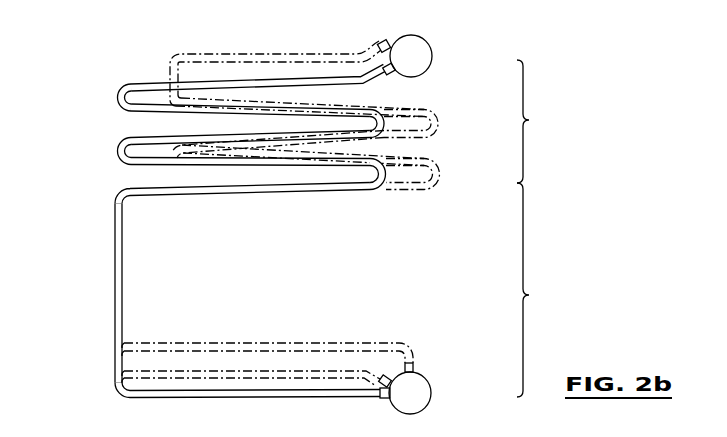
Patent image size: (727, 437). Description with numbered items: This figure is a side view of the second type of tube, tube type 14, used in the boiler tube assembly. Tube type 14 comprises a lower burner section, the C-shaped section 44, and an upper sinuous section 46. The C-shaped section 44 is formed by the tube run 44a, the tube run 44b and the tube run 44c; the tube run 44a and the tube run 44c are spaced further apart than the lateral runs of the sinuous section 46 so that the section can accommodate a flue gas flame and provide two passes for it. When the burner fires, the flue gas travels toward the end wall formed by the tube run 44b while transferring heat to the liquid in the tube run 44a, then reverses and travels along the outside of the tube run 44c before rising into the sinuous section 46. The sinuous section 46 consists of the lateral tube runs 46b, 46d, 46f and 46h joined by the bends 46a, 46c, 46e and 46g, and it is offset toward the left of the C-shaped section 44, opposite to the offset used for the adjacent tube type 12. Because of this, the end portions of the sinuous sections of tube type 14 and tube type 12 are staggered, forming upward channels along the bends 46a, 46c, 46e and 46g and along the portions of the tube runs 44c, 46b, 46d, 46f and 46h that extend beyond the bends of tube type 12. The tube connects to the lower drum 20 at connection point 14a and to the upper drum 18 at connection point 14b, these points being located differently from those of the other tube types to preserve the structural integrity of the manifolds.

The tube type 14 is at (296, 216).
The connection point 14a is at (379, 397).
The connection point 14b is at (393, 72).
The upper drum 18 is at (431, 50).
The lower drum 20 is at (427, 380).
The tube type 12 is at (430, 187).
The C-shaped section 44 is at (340, 303).
The tube run 44a is at (217, 390).
The tube run 44b is at (122, 280).
The tube run 44c is at (208, 197).
The sinuous section 46 is at (296, 133).
The bend 46a is at (396, 186).
The tube run 46b is at (298, 160).
The bend 46c is at (118, 152).
The tube run 46d is at (218, 134).
The bend 46e is at (383, 125).
The tube run 46f is at (302, 107).
The bend 46g is at (118, 93).
The tube run 46h is at (252, 80).